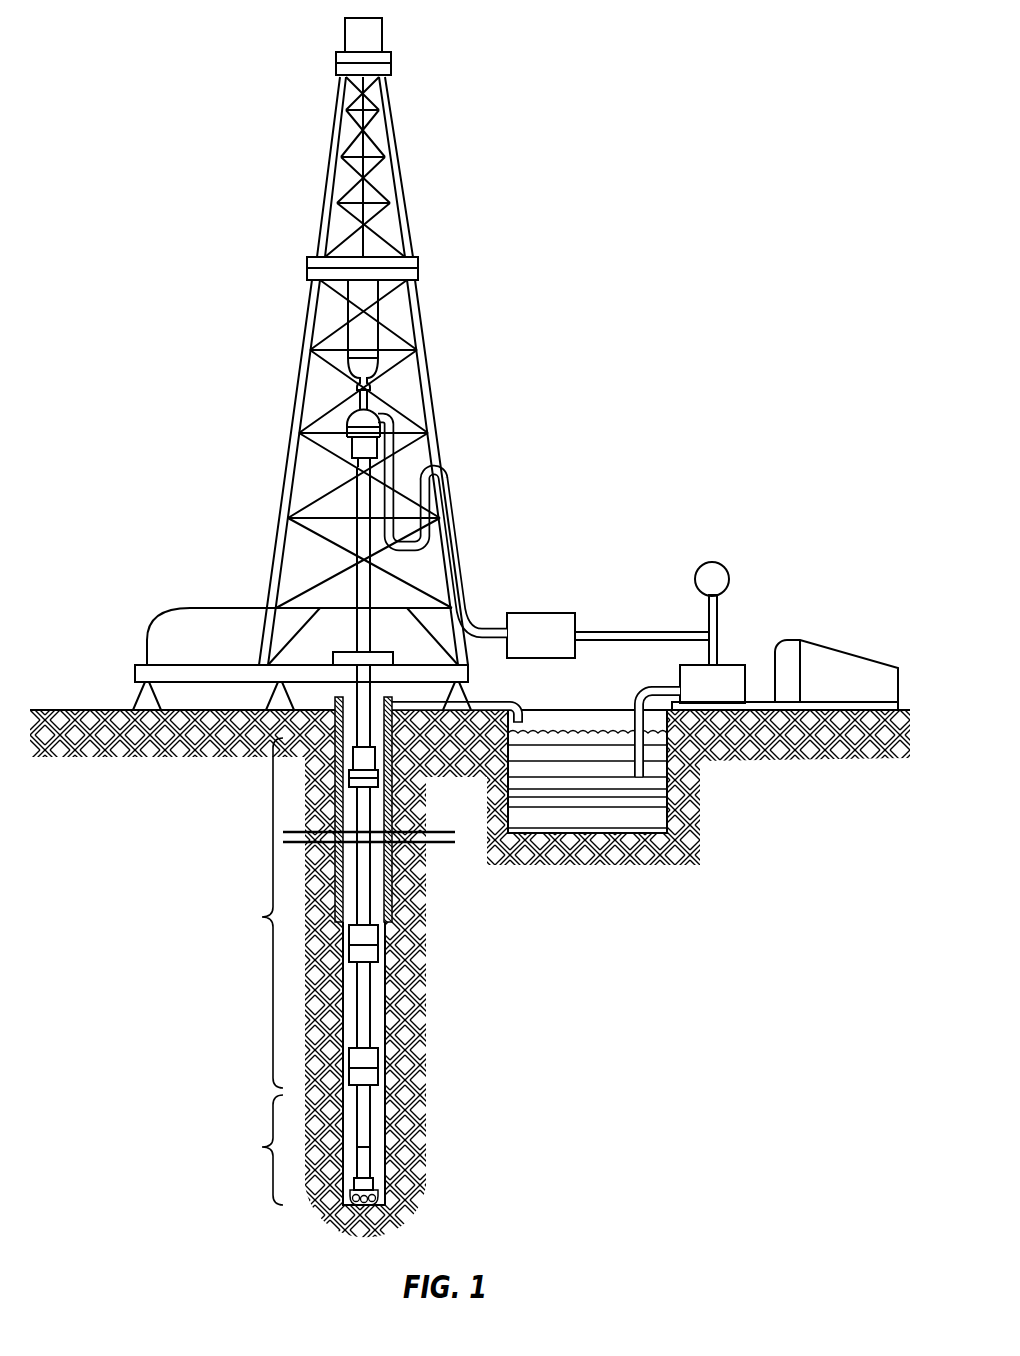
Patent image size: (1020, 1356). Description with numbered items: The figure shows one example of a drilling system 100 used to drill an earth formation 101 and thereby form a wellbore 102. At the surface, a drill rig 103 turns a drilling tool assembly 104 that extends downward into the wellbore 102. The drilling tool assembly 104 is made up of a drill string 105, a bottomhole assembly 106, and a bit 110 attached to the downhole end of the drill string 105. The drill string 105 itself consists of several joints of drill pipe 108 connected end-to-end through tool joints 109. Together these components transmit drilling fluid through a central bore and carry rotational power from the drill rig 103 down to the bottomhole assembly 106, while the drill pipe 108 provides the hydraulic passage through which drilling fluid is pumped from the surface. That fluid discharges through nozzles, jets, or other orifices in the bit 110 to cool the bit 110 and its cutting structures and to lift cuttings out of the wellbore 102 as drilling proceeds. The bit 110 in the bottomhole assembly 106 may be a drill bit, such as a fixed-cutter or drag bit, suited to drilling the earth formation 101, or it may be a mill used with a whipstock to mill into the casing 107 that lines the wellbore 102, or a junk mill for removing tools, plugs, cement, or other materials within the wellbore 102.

The drilling system 100 is at (523, 52).
The earth formation 101 is at (486, 756).
The wellbore 102 is at (393, 1043).
The drill rig 103 is at (298, 382).
The drilling tool assembly 104 is at (404, 901).
The drill string 105 is at (253, 913).
The bottomhole assembly 106 is at (253, 1150).
The casing 107 is at (393, 877).
The drill pipe 108 is at (372, 1008).
The tool joint 109 is at (372, 955).
The bit 110 is at (385, 1197).